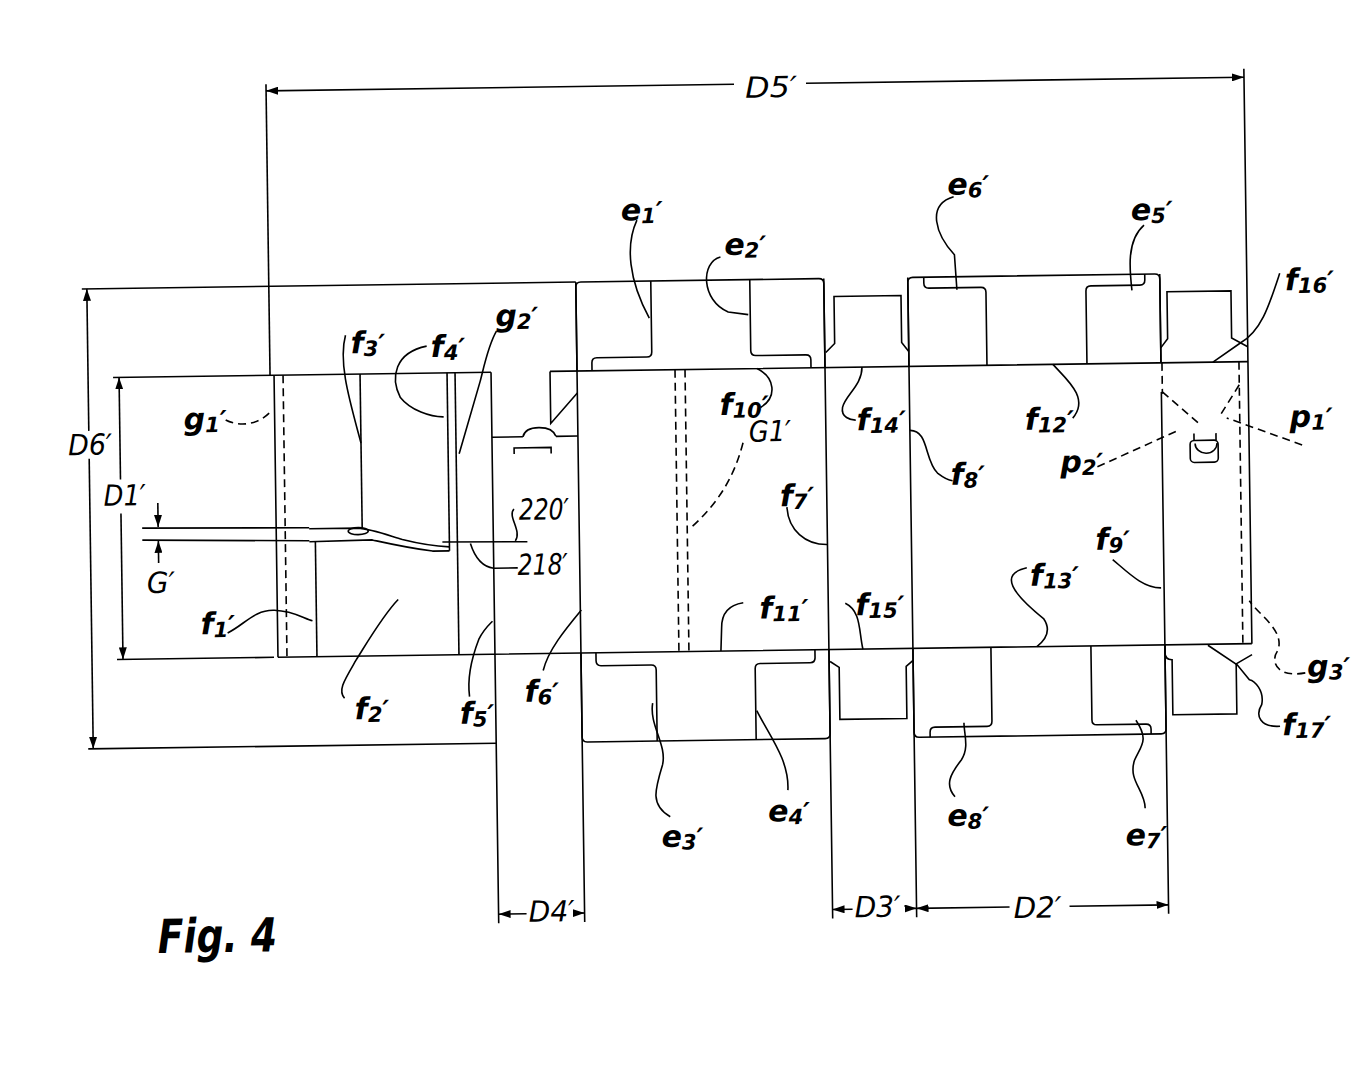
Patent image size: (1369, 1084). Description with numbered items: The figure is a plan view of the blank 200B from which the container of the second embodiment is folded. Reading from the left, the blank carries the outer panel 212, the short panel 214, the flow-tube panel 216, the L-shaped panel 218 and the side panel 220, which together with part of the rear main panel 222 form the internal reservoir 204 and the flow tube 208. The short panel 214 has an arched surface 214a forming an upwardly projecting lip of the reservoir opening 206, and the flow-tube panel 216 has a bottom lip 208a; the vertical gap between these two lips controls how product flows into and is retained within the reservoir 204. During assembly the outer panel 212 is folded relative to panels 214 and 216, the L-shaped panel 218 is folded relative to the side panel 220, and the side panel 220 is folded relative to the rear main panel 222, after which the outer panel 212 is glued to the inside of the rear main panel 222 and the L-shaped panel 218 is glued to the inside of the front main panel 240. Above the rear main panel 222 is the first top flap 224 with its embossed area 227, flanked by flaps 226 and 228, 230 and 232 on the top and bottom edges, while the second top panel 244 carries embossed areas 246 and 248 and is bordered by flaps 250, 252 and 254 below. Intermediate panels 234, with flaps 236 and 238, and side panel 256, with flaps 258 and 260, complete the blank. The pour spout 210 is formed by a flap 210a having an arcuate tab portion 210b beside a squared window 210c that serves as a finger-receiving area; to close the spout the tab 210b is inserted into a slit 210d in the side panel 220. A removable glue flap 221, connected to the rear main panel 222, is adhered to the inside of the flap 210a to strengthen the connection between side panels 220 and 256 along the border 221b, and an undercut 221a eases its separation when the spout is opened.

The blank 200B is at (240, 253).
The pour spout 210 is at (1286, 228).
The reservoir 204 is at (266, 667).
The reservoir opening 206 is at (386, 530).
The flow tube 208 is at (332, 660).
The bottom lip of flow-tube panel 208a is at (352, 527).
The outer panel 212 is at (311, 412).
The short panel 214 is at (347, 600).
The arched surface (lip) 214a is at (369, 533).
The flow-tube panel 216 is at (380, 405).
The L-shaped panel 218 is at (423, 607).
The side panel 220 is at (520, 621).
The glue flap 221 is at (559, 370).
The undercut 221a is at (567, 407).
The border of side panel 221b is at (525, 428).
The flap 210a is at (1207, 392).
The tab portion 210b is at (1216, 455).
The window 210c is at (1208, 468).
The slit 210d is at (525, 453).
The rear main panel 222 is at (603, 612).
The first top flap 224 is at (692, 320).
The left tab of top front flap 226 is at (600, 297).
The embossed area 227 is at (787, 315).
The bottom front flap 228 is at (695, 707).
The left tab of bottom front flap 230 is at (603, 712).
The right tab of bottom front flap 232 is at (784, 715).
The side panel 234 is at (886, 398).
The top side flap 236 is at (862, 322).
The bottom side flap 238 is at (874, 712).
The front main panel 240 is at (1009, 411).
The second top panel 244 is at (1060, 309).
The embossed area 246 is at (1117, 322).
The embossed area 248 is at (943, 327).
The bottom back flap 250 is at (1056, 700).
The right tab of bottom back flap 252 is at (1121, 688).
The left tab of bottom back flap 254 is at (971, 698).
The side panel 256 is at (1208, 552).
The top end flap 258 is at (1204, 322).
The bottom end flap 260 is at (1198, 699).